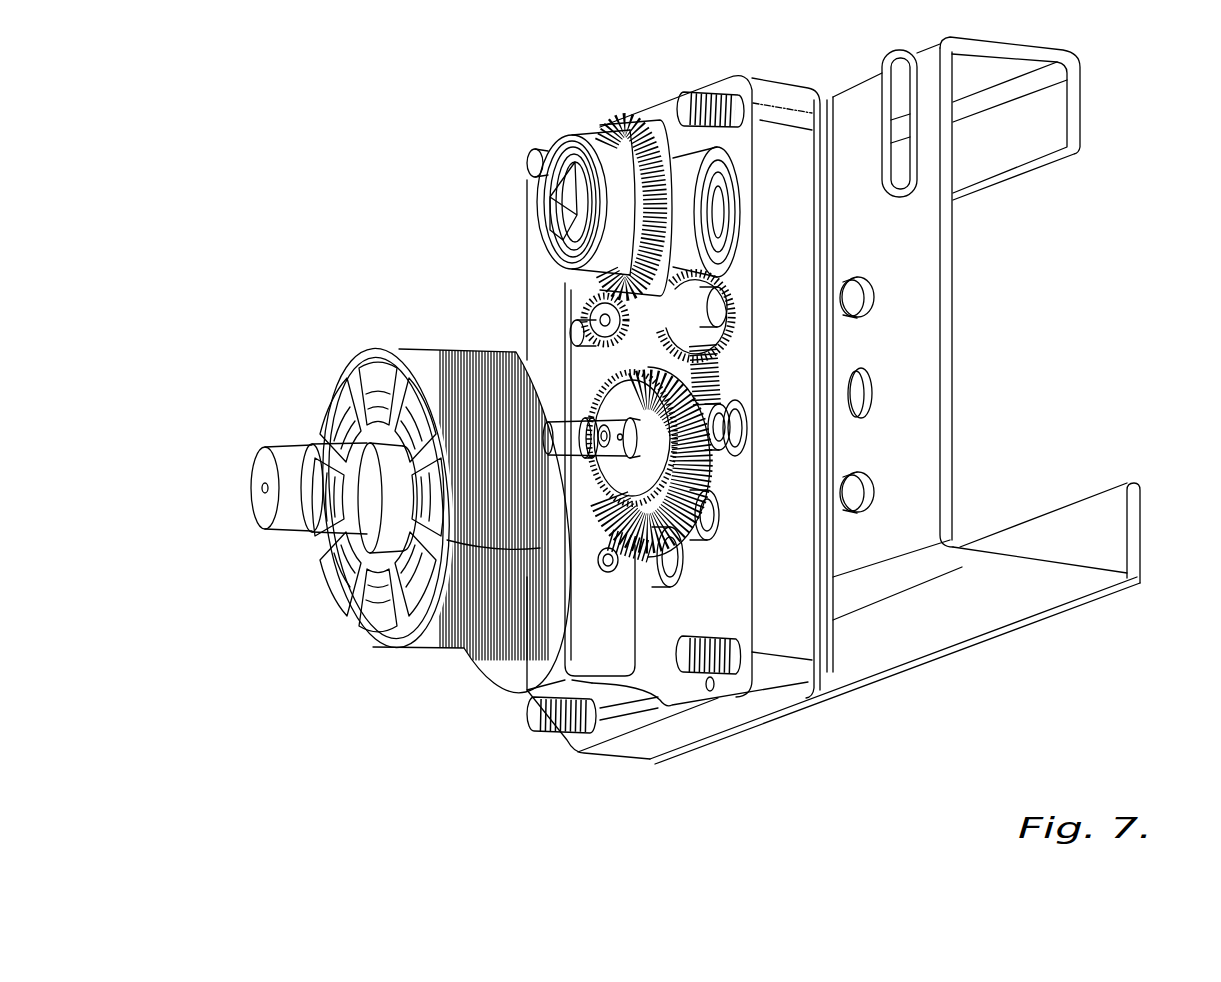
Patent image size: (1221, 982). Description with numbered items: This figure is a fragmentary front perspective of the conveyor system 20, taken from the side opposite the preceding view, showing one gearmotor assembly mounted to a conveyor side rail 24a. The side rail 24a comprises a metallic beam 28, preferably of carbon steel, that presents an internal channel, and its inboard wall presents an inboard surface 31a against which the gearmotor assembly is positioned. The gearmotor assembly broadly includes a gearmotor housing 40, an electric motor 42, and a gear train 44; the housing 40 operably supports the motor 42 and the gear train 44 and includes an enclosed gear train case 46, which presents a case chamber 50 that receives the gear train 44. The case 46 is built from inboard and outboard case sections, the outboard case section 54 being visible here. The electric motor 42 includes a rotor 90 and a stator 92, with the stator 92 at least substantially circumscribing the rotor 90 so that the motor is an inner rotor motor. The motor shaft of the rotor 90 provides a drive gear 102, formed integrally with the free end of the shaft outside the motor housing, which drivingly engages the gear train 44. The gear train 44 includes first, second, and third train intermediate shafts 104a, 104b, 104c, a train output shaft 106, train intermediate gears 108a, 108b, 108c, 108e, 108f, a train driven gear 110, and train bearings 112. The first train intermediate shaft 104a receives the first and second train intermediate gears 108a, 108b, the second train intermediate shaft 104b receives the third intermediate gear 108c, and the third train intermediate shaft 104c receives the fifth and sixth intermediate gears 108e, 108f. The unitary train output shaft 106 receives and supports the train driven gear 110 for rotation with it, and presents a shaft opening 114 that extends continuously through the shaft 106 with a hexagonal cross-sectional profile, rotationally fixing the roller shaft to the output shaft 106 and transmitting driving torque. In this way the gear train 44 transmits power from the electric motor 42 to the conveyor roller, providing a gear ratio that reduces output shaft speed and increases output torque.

The conveyor system 20 is at (292, 161).
The conveyor side rail 24a is at (1070, 588).
The metallic beam 28 is at (960, 620).
The inboard surface 31a is at (930, 235).
The gearmotor housing 40 is at (762, 82).
The electric motor 42 is at (410, 350).
The gear train 44 is at (710, 410).
The gear train case 46 is at (772, 117).
The case chamber 50 is at (677, 690).
The outboard case section 54 is at (758, 706).
The rotor 90 is at (380, 535).
The stator 92 is at (422, 650).
The drive gear 102 is at (652, 556).
The first train intermediate shaft 104a is at (618, 442).
The second train intermediate shaft 104b is at (570, 430).
The third train intermediate shaft 104c is at (666, 340).
The train output shaft 106 is at (543, 206).
The first train intermediate gear 108a is at (656, 456).
The second train intermediate gear 108b is at (726, 456).
The third train intermediate gear 108c is at (600, 394).
The fifth train intermediate gear 108e is at (735, 275).
The sixth train intermediate gear 108f is at (598, 310).
The train driven gear 110 is at (621, 128).
The train bearings 112 is at (600, 140).
The shaft opening 114 is at (568, 180).